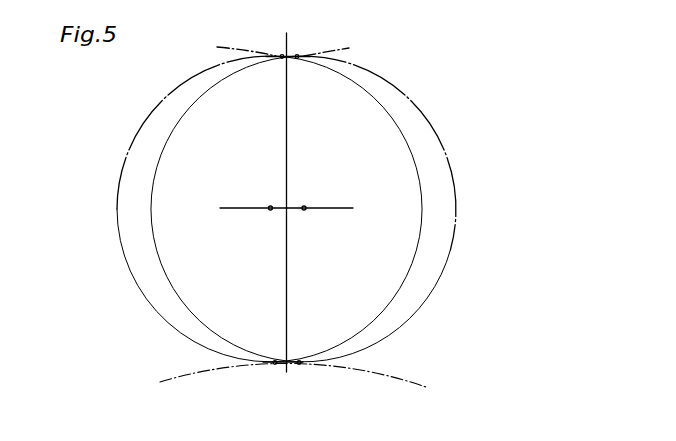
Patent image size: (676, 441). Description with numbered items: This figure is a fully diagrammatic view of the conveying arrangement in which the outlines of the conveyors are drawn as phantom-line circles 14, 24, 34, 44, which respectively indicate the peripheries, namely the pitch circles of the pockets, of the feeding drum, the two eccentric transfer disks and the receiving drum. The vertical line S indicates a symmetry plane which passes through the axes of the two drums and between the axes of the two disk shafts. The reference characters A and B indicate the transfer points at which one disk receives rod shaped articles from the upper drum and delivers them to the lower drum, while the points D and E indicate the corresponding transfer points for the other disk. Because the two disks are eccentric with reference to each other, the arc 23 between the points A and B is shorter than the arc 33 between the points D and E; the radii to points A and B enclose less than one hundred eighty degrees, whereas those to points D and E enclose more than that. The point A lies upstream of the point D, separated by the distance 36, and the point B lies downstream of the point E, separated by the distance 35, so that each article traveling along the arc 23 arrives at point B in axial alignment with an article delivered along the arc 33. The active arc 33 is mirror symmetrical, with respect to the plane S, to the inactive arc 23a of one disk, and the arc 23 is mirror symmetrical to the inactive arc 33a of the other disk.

The phantom-line circle 14 is at (349, 49).
The arc 23 is at (411, 148).
The arc 23a is at (124, 160).
The phantom-line circle 24 is at (134, 279).
The arc 33 is at (457, 213).
The arc 33a is at (157, 167).
The phantom-line circle 34 is at (427, 300).
The distance 35 is at (292, 360).
The distance 36 is at (284, 64).
The phantom-line circle 44 is at (231, 370).
The transfer point A is at (277, 56).
The transfer point B is at (274, 364).
The transfer point D is at (296, 54).
The transfer point E is at (300, 364).
The symmetry plane S is at (287, 270).